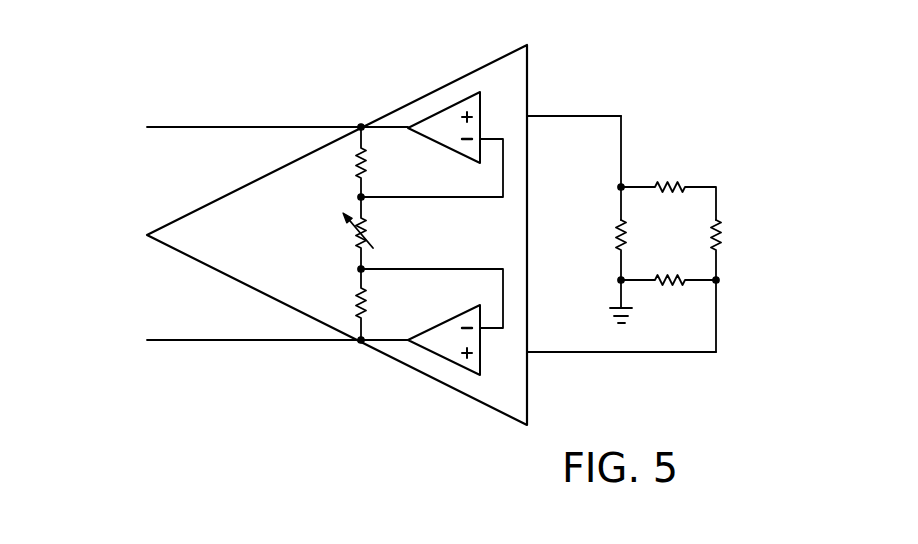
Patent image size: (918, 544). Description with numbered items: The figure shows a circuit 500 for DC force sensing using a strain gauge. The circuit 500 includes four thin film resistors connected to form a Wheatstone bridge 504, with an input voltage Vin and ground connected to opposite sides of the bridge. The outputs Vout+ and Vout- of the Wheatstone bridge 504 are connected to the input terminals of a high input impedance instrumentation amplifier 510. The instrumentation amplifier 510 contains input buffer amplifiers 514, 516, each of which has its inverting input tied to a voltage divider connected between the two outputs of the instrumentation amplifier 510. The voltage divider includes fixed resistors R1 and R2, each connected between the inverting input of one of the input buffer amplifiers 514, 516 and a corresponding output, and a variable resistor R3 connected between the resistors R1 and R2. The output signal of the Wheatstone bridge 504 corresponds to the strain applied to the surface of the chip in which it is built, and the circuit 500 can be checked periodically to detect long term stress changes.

The circuit 500 is at (453, 244).
The Wheatstone bridge 504 is at (800, 182).
The instrumentation amplifier 510 is at (285, 251).
The input buffer amplifier 514 is at (436, 144).
The input buffer amplifier 516 is at (435, 325).
The fixed resistor R1 is at (343, 162).
The fixed resistor R2 is at (343, 304).
The variable resistor R3 is at (346, 233).